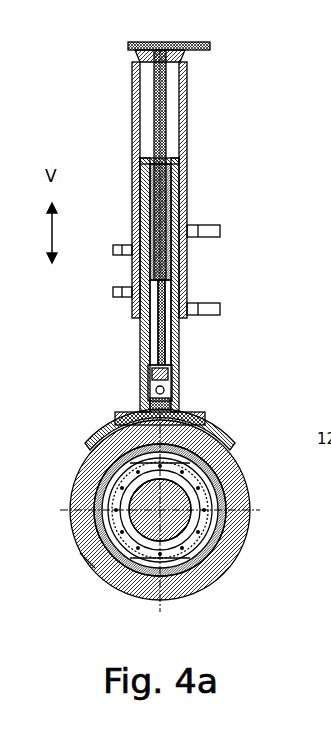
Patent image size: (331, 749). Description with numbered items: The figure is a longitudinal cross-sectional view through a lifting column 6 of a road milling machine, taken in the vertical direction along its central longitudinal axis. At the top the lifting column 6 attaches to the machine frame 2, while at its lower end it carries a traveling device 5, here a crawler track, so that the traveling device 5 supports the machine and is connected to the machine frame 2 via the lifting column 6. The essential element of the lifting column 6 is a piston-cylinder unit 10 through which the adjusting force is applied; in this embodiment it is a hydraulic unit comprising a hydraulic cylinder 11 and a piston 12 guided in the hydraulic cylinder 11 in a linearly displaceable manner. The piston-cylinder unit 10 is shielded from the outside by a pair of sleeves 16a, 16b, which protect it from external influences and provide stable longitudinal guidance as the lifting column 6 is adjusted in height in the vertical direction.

The machine frame 2 is at (170, 46).
The lifting column 6 is at (236, 99).
The sleeve 16a is at (132, 115).
The piston 12 is at (166, 128).
The piston-cylinder unit 10 is at (166, 215).
The hydraulic cylinder 11 is at (165, 316).
The sleeve 16b is at (137, 370).
The traveling device 5 is at (232, 550).